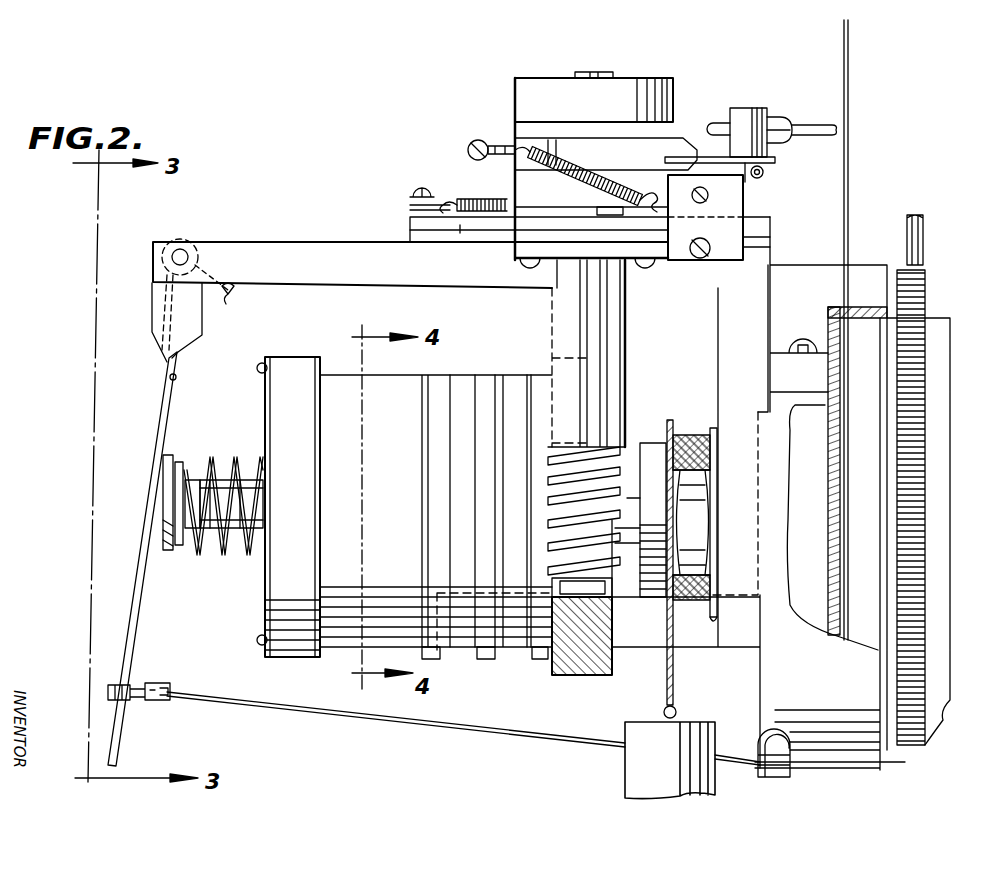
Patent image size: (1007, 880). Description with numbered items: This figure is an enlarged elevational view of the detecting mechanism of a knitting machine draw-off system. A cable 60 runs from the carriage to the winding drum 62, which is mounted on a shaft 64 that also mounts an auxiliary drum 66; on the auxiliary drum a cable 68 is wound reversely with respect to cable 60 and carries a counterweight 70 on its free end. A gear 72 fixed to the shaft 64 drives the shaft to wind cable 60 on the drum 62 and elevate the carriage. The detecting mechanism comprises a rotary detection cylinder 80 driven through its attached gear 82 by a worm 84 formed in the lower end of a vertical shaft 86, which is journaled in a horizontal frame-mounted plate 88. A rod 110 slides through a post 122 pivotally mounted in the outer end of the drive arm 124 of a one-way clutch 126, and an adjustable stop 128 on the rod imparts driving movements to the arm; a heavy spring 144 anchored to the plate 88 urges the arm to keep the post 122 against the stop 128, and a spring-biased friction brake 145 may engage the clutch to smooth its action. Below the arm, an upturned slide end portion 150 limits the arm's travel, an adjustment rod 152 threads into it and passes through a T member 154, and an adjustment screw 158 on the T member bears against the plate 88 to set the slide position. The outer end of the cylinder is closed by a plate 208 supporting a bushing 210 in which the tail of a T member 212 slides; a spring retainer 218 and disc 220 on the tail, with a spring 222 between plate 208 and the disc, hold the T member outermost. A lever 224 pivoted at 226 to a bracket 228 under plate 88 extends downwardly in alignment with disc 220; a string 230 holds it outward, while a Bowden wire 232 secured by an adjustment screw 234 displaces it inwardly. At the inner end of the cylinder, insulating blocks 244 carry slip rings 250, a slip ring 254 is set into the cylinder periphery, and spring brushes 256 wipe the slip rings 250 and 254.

The cable 60 is at (848, 184).
The winding drum 62 is at (872, 348).
The shaft 64 is at (631, 550).
The auxiliary drum 66 is at (674, 435).
The cable 68 is at (672, 690).
The counterweight 70 is at (690, 732).
The gear 72 is at (920, 524).
The rotary detection cylinder 80 is at (328, 374).
The gear 82 is at (580, 684).
The worm 84 is at (590, 496).
The vertical shaft 86 is at (625, 342).
The plate 88 is at (418, 234).
The rod 110 is at (835, 127).
The post 122 is at (754, 118).
The drive arm 124 is at (775, 165).
The one-way clutch 126 is at (514, 123).
The adjustable stop 128 is at (785, 122).
The spring 144 is at (520, 183).
The friction brake 145 is at (410, 212).
The slide end portion 150 is at (700, 164).
The adjustment rod 152 is at (708, 195).
The T member 154 is at (736, 237).
The adjustment screw 158 is at (703, 258).
The plate 208 is at (265, 612).
The bushing 210 is at (246, 556).
The T member 212 is at (198, 555).
The spring retainer 218 is at (179, 462).
The disc 220 is at (168, 455).
The spring 222 is at (217, 463).
The lever 224 is at (137, 654).
The pivot 226 is at (183, 254).
The bracket 228 is at (322, 248).
The string 230 is at (230, 295).
The Bowden wire 232 is at (343, 722).
The adjustment screw 234 is at (141, 704).
The insulating blocks 244 is at (472, 383).
The slip ring 250 is at (545, 385).
The slip ring 254 is at (442, 385).
The spring brushes 256 is at (431, 659).